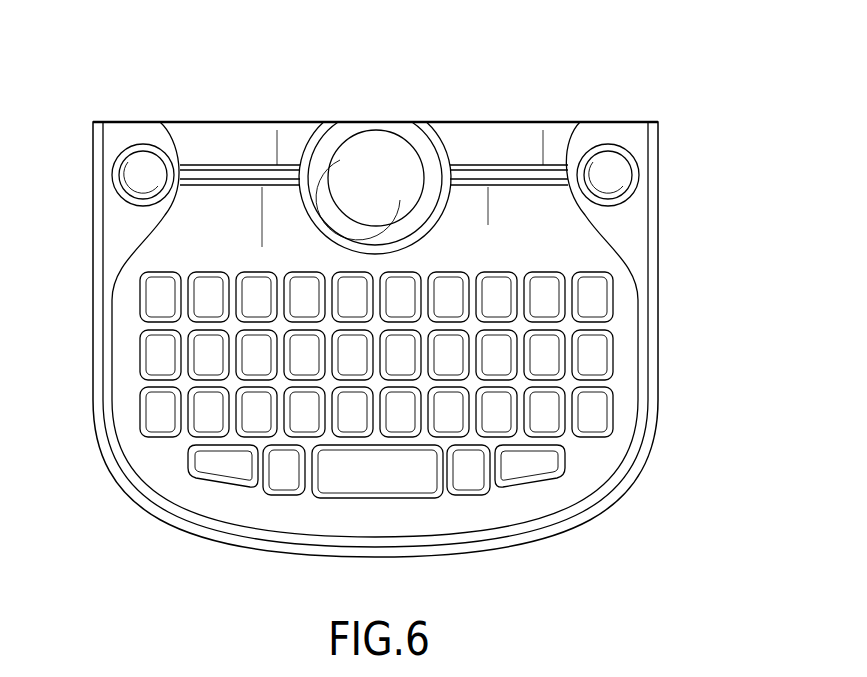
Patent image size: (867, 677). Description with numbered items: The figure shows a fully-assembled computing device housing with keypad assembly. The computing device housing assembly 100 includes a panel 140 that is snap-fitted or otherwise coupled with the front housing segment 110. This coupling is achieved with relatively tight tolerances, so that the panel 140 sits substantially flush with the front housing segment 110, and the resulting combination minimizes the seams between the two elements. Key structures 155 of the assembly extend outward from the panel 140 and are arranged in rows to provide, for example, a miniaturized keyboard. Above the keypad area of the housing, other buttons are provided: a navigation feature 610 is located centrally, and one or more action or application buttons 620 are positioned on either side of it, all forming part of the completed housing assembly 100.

The computing device housing assembly 100 is at (696, 188).
The front housing segment 110 is at (480, 152).
The panel 140 is at (215, 211).
The key structures 155 is at (597, 290).
The navigation feature 610 is at (365, 153).
The action buttons 620 is at (138, 163).